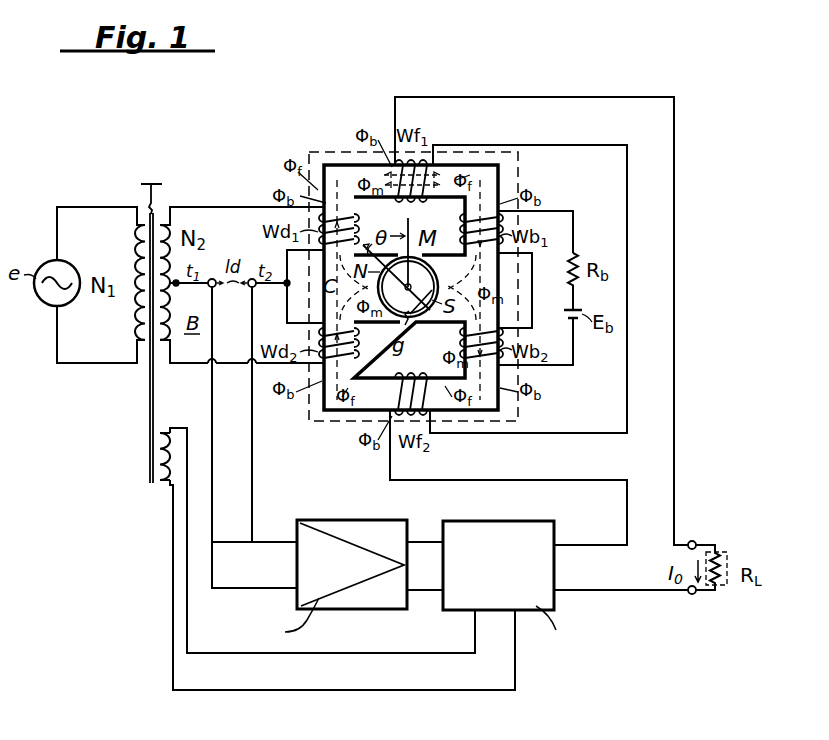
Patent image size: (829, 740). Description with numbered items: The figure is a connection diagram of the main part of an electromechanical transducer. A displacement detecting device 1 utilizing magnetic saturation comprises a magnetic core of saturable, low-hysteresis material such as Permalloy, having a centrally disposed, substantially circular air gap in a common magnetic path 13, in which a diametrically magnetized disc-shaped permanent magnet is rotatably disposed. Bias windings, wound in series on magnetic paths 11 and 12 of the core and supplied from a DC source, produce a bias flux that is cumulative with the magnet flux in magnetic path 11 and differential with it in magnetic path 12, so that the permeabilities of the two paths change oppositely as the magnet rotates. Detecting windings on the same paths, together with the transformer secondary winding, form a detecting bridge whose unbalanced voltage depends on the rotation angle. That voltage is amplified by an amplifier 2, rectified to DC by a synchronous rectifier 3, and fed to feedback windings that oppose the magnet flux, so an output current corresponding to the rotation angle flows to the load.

The displacement detecting device 1 is at (332, 152).
The amplifier 2 is at (371, 520).
The synchronous rectifier 3 is at (491, 521).
The magnetic path 11 is at (506, 172).
The magnetic path 12 is at (502, 407).
The common magnetic path 13 is at (450, 266).